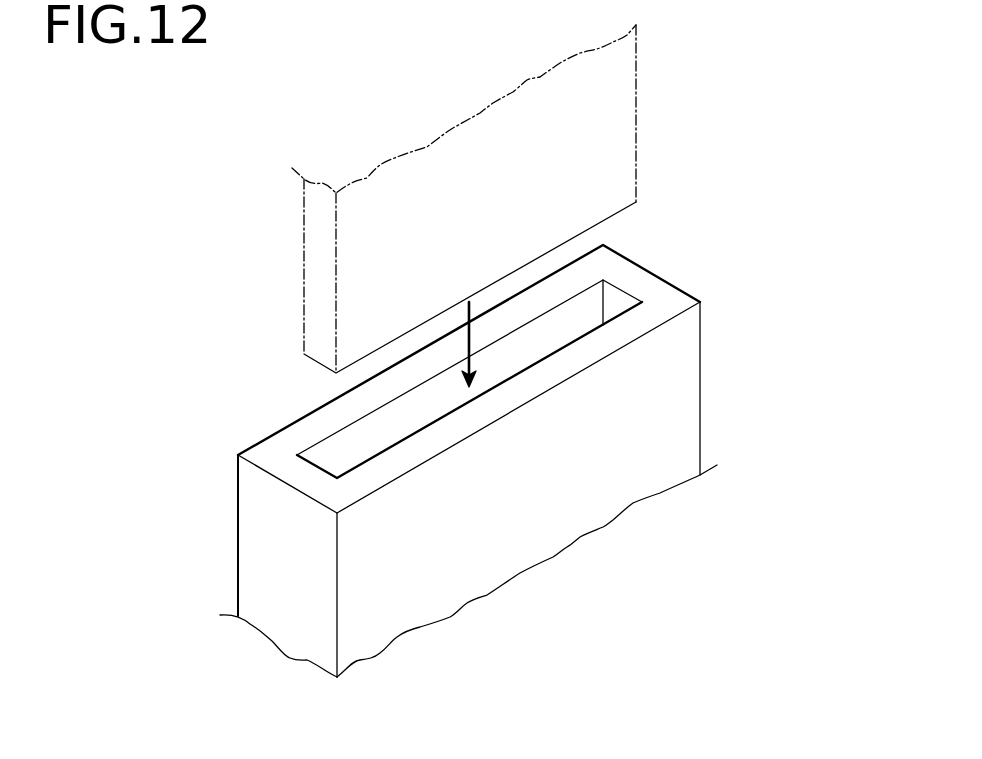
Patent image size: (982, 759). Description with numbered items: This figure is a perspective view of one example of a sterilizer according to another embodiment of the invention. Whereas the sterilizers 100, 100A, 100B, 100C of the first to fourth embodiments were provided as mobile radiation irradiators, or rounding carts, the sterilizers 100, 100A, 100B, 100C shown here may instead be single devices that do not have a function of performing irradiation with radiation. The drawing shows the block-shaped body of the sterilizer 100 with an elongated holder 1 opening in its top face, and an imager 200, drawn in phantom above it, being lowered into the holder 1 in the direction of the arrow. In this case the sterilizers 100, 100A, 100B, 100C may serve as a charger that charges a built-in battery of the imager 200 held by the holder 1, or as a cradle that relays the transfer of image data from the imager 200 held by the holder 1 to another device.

The imager 200 is at (473, 142).
The holder 1 is at (325, 440).
The sterilizer 100 is at (525, 461).
The sterilizer 100A is at (525, 461).
The sterilizer 100B is at (525, 461).
The sterilizer 100C is at (565, 562).